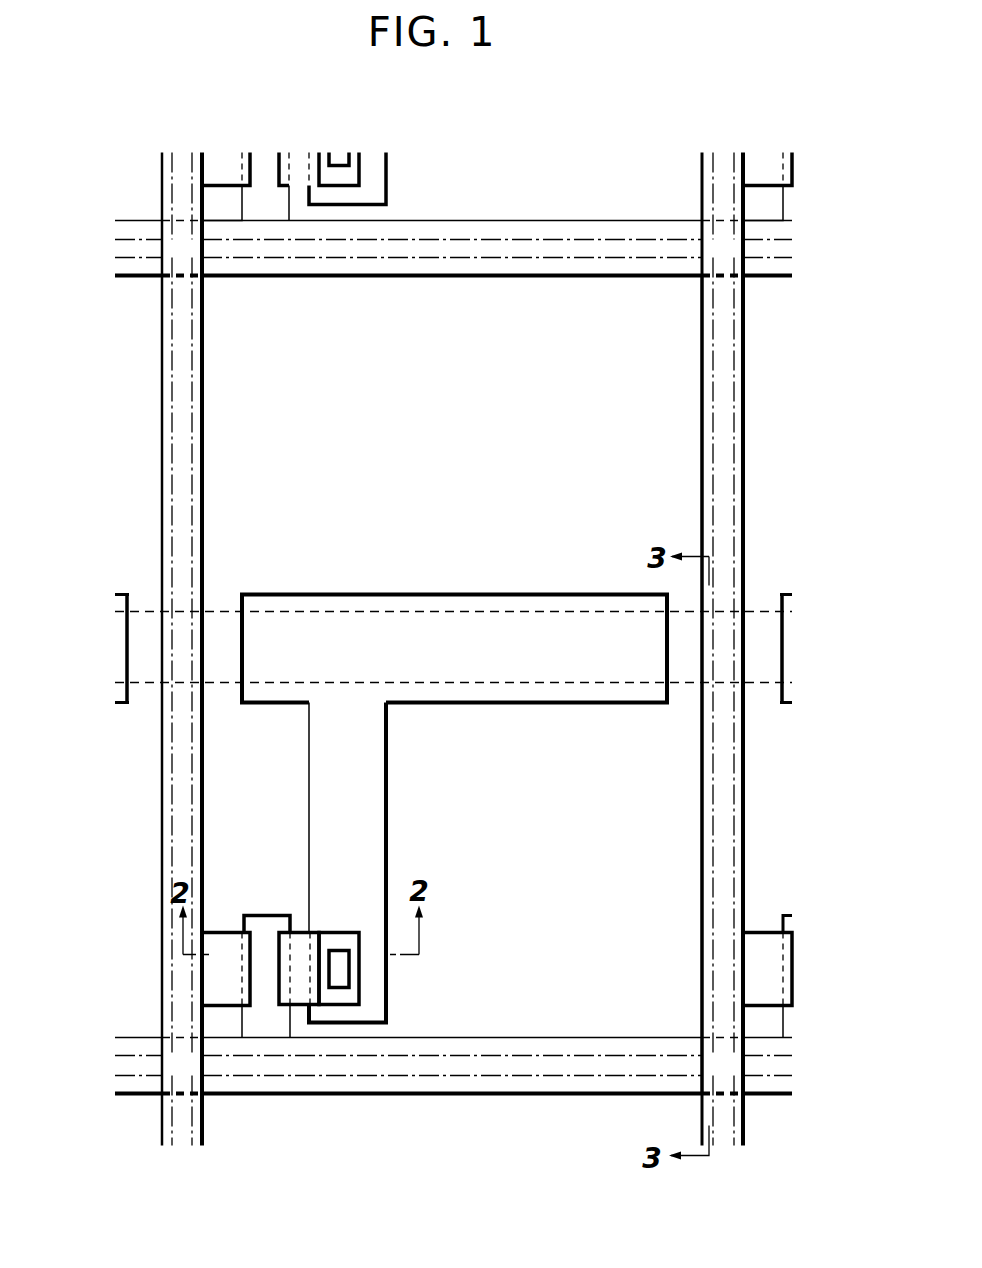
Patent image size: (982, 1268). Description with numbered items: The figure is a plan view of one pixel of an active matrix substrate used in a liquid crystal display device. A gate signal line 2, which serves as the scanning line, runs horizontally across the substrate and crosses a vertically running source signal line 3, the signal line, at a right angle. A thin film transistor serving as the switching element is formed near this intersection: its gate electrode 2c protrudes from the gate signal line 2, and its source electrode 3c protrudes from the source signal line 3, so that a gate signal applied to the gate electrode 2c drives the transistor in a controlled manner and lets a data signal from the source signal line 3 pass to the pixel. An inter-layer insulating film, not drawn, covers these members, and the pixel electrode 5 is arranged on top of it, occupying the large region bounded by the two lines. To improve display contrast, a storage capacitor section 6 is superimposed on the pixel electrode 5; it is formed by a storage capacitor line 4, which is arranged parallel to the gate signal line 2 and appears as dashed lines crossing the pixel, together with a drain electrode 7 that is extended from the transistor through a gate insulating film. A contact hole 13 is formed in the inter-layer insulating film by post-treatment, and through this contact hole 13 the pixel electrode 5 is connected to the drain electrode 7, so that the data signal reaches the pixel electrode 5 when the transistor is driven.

The gate signal line 2 is at (492, 214).
The source signal line 3 is at (157, 515).
The storage capacitor line 4 is at (757, 665).
The pixel electrode 5 is at (712, 397).
The storage capacitor section 6 is at (486, 662).
The drain electrode 7 is at (299, 990).
The contact hole 13 is at (338, 965).
The gate electrode 2c is at (262, 920).
The source electrode 3c is at (218, 975).